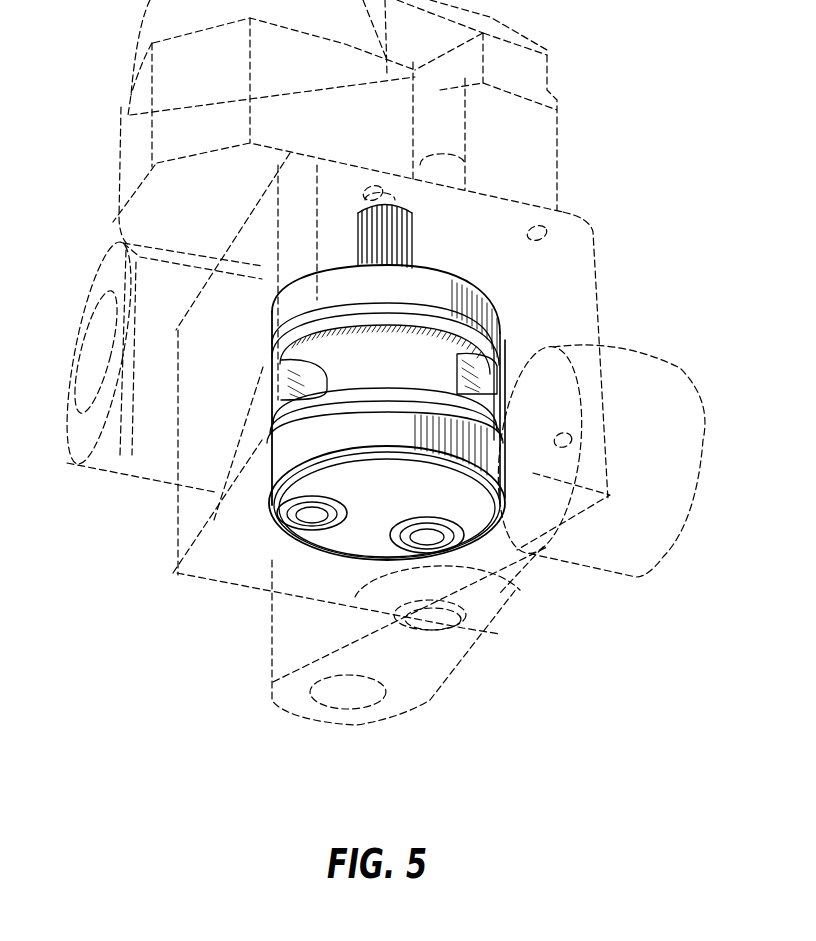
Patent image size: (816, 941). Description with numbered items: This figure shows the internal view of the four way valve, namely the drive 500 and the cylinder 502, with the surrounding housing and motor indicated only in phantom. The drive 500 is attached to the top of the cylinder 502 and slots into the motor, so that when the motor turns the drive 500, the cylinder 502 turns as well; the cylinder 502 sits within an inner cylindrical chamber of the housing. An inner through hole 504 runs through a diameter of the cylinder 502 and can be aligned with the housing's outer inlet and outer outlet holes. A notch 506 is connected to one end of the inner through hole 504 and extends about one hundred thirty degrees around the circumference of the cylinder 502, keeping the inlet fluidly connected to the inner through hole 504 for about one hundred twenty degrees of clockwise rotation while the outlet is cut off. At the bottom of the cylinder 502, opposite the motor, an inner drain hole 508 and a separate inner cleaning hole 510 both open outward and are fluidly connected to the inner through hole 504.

The drive 500 is at (418, 205).
The cylinder 502 is at (516, 273).
The inner through hole 504 is at (274, 386).
The notch 506 is at (334, 361).
The inner drain hole 508 is at (440, 548).
The inner cleaning hole 510 is at (303, 522).